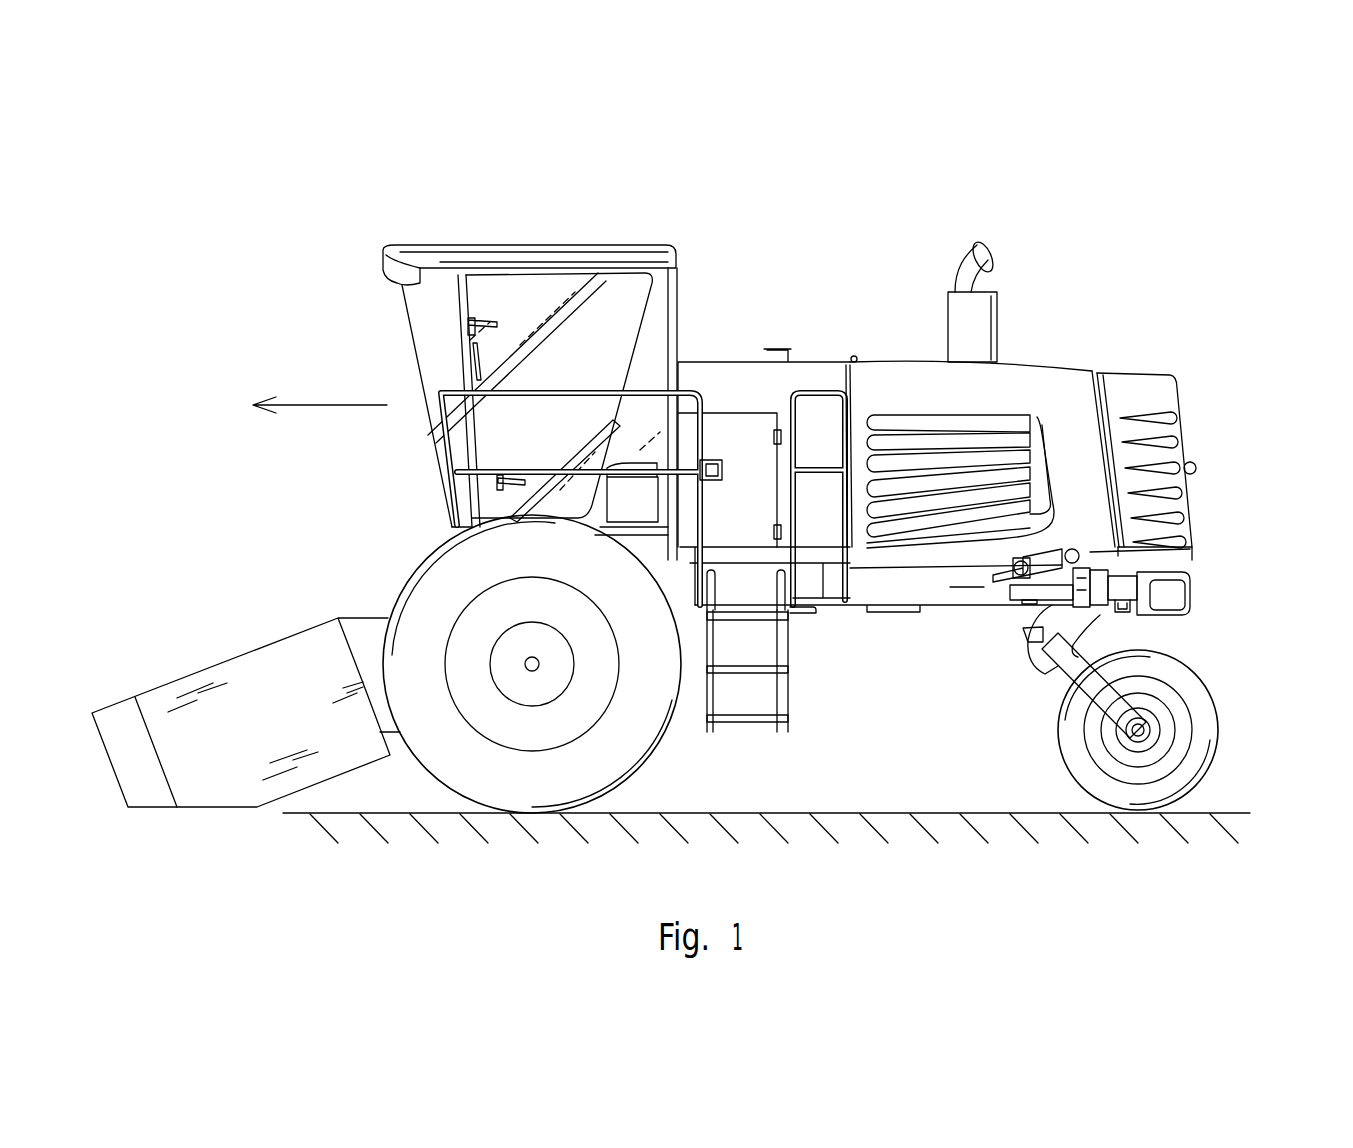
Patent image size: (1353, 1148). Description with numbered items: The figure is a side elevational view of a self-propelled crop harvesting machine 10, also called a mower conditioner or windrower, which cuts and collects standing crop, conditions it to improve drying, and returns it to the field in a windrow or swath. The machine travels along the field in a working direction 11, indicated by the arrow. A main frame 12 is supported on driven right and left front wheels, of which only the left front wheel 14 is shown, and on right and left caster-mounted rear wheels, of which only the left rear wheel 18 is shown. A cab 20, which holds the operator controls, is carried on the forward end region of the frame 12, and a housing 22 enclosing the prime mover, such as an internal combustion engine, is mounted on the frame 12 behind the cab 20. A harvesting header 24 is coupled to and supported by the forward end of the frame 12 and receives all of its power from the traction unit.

The self-propelled crop harvesting machine 10 is at (930, 146).
The working direction 11 is at (318, 404).
The main frame 12 is at (947, 600).
The left front wheel 14 is at (642, 752).
The left rear wheel 18 is at (1222, 708).
The cab 20 is at (523, 255).
The housing 22 is at (1025, 378).
The harvesting header 24 is at (200, 640).